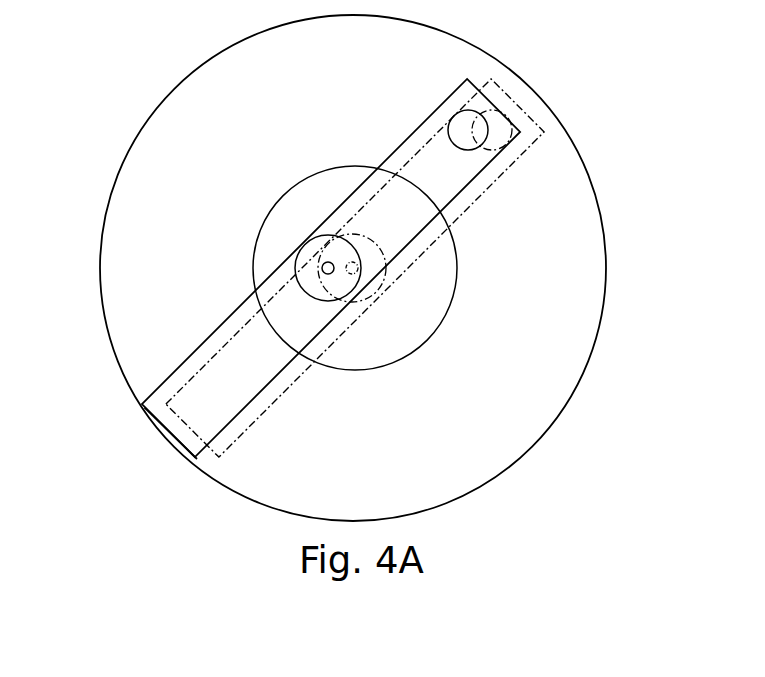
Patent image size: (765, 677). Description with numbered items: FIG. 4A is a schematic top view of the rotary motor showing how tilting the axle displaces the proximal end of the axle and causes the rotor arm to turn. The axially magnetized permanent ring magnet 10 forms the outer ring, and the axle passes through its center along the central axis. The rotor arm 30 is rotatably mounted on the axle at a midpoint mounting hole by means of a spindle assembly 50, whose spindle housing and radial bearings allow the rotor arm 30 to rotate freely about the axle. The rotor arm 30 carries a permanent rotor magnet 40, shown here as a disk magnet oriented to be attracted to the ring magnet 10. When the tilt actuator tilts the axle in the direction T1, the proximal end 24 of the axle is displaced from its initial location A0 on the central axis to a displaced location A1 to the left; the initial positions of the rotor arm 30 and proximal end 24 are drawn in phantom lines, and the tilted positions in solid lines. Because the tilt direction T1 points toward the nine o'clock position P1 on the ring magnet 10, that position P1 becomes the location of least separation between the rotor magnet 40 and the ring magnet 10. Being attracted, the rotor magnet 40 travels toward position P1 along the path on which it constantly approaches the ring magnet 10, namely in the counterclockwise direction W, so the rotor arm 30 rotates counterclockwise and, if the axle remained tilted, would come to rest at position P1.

The ring magnet 10 is at (598, 135).
The proximal end of the axle 24 is at (298, 277).
The rotor arm 30 is at (143, 406).
The rotor magnet 40 is at (451, 118).
The spindle assembly 50 is at (308, 250).
The counterclockwise direction W is at (150, 190).
The nine o'clock position P1 is at (78, 273).
The direction of tilt T1 is at (538, 269).
The displaced location A1 is at (328, 274).
The initial location A0 is at (340, 302).